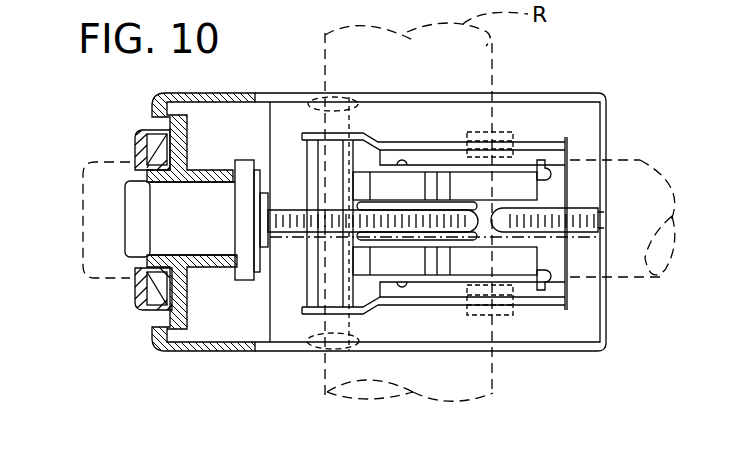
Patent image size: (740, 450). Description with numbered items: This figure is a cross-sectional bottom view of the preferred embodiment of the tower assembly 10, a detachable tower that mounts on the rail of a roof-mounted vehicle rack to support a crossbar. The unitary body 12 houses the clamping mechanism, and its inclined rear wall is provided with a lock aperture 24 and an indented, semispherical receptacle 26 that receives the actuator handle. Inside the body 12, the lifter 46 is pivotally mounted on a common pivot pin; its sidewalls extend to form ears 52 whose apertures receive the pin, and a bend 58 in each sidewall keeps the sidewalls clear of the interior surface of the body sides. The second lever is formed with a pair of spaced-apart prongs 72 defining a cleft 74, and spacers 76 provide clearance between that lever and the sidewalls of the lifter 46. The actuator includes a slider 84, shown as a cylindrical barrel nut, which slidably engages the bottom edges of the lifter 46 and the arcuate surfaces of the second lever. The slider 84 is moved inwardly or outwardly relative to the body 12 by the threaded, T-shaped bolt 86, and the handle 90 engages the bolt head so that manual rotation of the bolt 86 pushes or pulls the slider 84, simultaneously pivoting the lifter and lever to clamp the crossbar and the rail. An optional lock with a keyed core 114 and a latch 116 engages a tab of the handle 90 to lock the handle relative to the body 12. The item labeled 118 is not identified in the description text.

The tower assembly 10 is at (95, 101).
The unitary body 12 is at (207, 93).
The lock aperture 24 is at (182, 185).
The semispherical receptacle 26 is at (166, 150).
The lifter 46 is at (433, 290).
The ears 52 is at (313, 312).
The bend 58 is at (368, 314).
The prongs 72 is at (525, 180).
The cleft 74 is at (510, 221).
The spacers 76 is at (352, 157).
The slider 84 is at (502, 292).
The bolt 86 is at (600, 220).
The handle 90 is at (137, 292).
The keyed core 114 is at (198, 243).
The latch 116 is at (247, 273).
The cable 118 is at (638, 157).